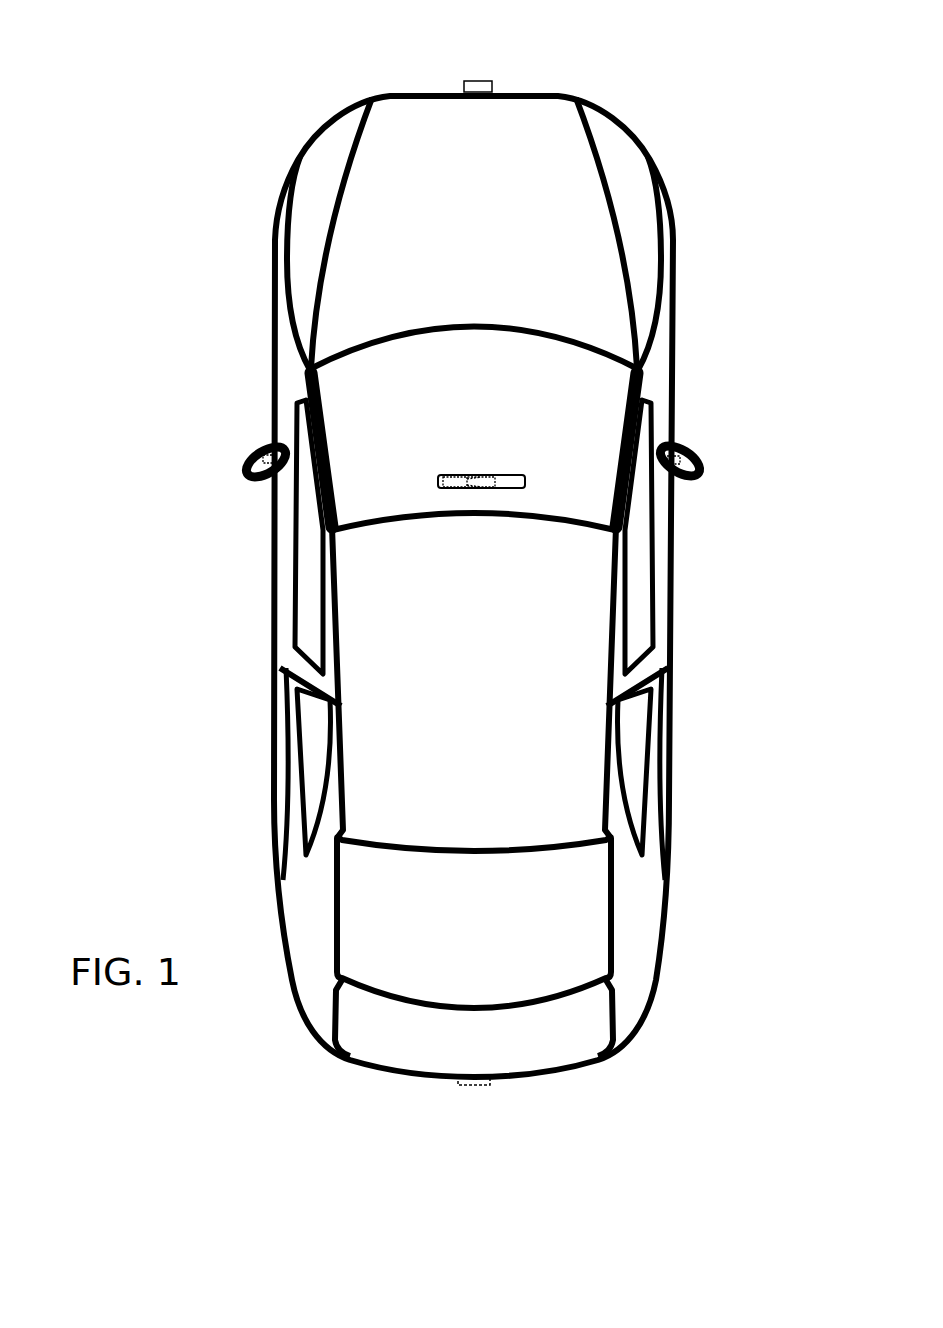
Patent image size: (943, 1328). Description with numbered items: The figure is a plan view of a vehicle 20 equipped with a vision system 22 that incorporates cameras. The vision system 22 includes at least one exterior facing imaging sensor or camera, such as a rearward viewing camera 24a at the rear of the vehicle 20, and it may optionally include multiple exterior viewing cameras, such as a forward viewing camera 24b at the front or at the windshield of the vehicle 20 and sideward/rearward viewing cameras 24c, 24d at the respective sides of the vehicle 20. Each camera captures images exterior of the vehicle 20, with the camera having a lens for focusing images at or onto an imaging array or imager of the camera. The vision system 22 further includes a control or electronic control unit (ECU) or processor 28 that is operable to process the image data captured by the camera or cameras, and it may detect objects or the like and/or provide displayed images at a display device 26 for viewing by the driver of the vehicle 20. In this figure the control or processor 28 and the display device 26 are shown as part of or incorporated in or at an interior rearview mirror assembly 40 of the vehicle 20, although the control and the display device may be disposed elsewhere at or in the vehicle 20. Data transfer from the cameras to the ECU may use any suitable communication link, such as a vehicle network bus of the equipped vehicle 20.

The vehicle 20 is at (214, 178).
The vision system 22 is at (413, 1111).
The rearward viewing camera 24a is at (481, 1085).
The forward viewing camera 24b is at (483, 81).
The sideward/rearward viewing camera 24c is at (262, 457).
The sideward/rearward viewing camera 24d is at (683, 453).
The display device 26 is at (455, 475).
The electronic control unit 28 is at (477, 473).
The interior rearview mirror assembly 40 is at (525, 475).